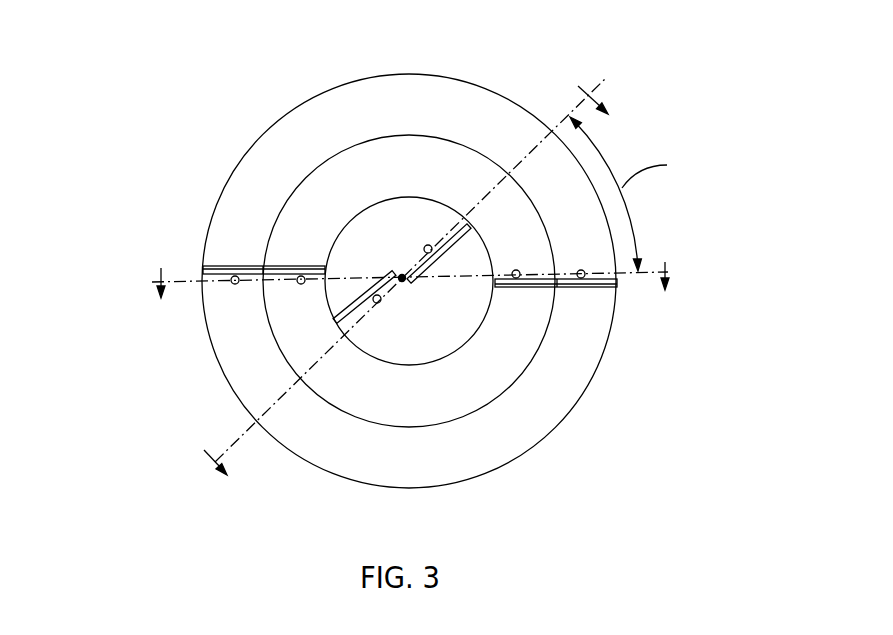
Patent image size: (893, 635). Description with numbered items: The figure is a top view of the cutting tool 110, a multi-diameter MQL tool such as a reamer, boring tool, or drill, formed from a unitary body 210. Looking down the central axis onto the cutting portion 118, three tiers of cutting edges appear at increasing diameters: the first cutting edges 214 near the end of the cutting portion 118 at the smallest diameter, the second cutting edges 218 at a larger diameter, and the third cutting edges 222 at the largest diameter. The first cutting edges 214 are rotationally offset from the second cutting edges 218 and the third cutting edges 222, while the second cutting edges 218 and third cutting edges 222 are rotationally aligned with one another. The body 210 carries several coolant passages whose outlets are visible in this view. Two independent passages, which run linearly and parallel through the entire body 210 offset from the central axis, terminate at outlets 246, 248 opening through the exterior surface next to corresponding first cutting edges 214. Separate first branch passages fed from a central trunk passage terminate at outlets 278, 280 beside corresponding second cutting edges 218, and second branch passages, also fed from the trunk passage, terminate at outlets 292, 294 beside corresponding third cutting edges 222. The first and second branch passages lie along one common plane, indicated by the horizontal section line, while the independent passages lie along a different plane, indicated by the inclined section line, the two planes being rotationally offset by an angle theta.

The cutting tool 110 is at (411, 271).
The cutting portion 118 is at (285, 145).
The unitary body 210 is at (530, 450).
The first cutting edges 214 is at (450, 240).
The second cutting edges 218 is at (280, 274).
The third cutting edges 222 is at (235, 266).
The outlet 246 is at (426, 246).
The outlet 248 is at (379, 303).
The outlet 278 is at (518, 278).
The outlet 280 is at (300, 284).
The outlet 292 is at (583, 278).
The outlet 294 is at (233, 284).